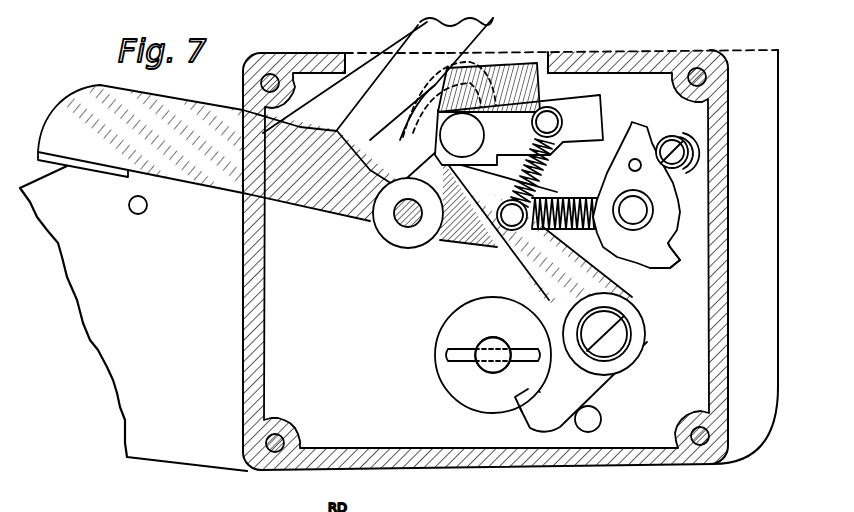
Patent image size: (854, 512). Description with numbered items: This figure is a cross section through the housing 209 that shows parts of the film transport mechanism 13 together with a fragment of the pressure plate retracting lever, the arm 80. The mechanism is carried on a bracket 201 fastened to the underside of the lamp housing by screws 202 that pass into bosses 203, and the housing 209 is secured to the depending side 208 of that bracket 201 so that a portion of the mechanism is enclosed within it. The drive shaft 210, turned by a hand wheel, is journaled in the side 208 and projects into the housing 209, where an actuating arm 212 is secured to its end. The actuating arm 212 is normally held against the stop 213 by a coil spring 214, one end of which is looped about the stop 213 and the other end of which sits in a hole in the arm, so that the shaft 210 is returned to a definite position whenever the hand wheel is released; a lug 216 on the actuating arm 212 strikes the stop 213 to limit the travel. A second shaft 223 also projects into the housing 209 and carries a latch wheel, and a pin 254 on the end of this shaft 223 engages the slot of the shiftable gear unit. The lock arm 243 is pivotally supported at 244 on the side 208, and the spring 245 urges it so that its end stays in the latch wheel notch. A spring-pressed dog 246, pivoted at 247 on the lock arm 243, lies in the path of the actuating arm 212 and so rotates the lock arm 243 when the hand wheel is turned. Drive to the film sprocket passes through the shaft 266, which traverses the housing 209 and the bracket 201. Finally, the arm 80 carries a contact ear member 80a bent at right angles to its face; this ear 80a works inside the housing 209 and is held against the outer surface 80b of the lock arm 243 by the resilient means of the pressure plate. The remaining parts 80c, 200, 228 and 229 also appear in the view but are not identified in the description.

The film transport mechanism 13 is at (383, 282).
The arm 80 is at (422, 24).
The contact ear member 80a is at (342, 141).
The outer surface 80b is at (330, 208).
The lever curved portion 80c is at (407, 120).
The wheel 200 is at (462, 401).
The bracket 201 is at (522, 392).
The screws 202 is at (518, 408).
The bosses 203 is at (348, 121).
The depending side 208 is at (383, 434).
The housing 209 is at (243, 306).
The drive shaft 210 is at (640, 209).
The actuating arm 212 is at (680, 230).
The stop 213 is at (660, 138).
The coil spring 214 is at (688, 145).
The lug 216 is at (676, 266).
The shaft 223 is at (483, 378).
The spring 228 is at (551, 166).
The ring 229 is at (501, 151).
The lock arm 243 is at (628, 367).
The pivot 244 is at (620, 336).
The spring 245 is at (562, 198).
The spring-pressed dog 246 is at (587, 110).
The pivot 247 is at (477, 112).
The pin 254 is at (448, 352).
The shaft 266 is at (388, 242).